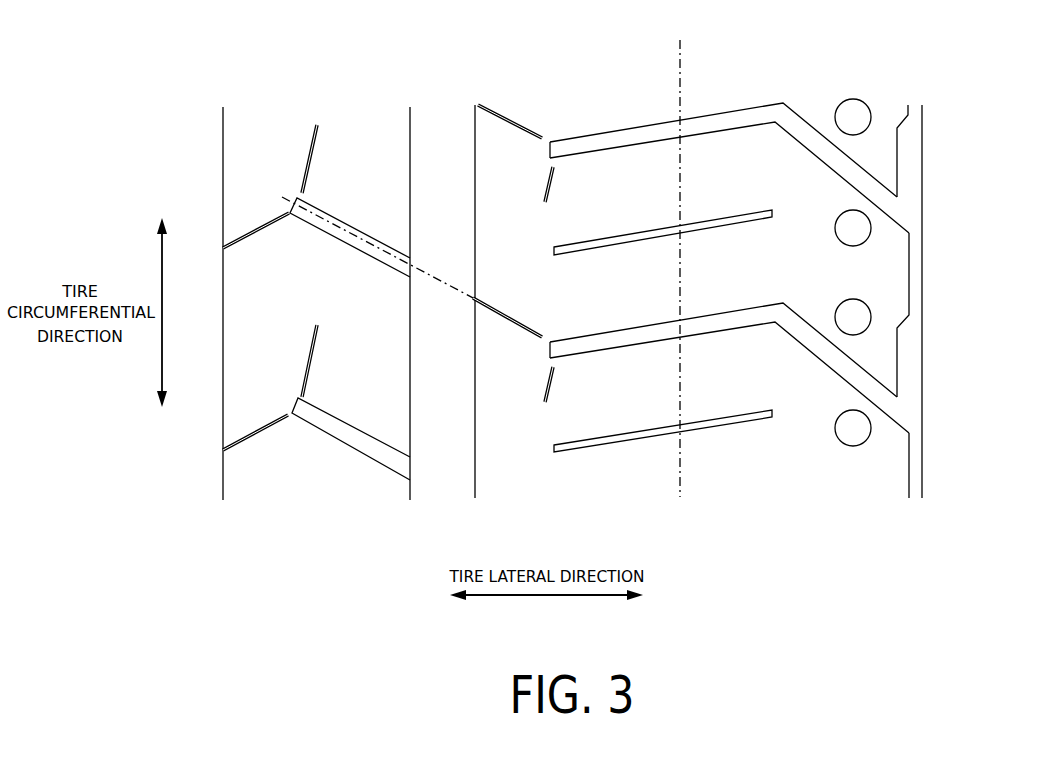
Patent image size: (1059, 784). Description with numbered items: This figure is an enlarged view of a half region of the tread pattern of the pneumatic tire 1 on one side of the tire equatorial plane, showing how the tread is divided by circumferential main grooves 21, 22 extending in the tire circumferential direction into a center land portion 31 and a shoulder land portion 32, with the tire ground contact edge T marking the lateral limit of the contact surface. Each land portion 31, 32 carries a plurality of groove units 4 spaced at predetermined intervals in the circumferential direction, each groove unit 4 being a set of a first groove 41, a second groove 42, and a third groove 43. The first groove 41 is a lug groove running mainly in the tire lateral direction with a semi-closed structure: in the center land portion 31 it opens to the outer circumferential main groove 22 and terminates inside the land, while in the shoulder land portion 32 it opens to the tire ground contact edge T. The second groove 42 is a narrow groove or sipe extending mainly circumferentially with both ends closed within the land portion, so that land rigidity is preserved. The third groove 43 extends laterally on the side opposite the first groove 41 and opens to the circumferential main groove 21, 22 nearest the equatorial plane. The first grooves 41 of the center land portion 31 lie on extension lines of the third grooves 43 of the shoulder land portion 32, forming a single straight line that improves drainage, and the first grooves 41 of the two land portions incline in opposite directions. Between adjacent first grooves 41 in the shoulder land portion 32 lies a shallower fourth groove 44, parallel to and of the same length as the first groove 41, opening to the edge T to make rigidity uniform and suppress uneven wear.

The pneumatic tire 1 is at (800, 70).
The groove unit 4 is at (338, 152).
The circumferential main groove 21 is at (203, 118).
The circumferential main groove 22 is at (443, 112).
The center land portion 31 is at (276, 108).
The shoulder land portion 32 is at (716, 90).
The first groove 41 is at (345, 222).
The second groove 42 is at (317, 122).
The third groove 43 is at (242, 240).
The fourth groove 44 is at (610, 238).
The tire ground contact edge T is at (679, 254).